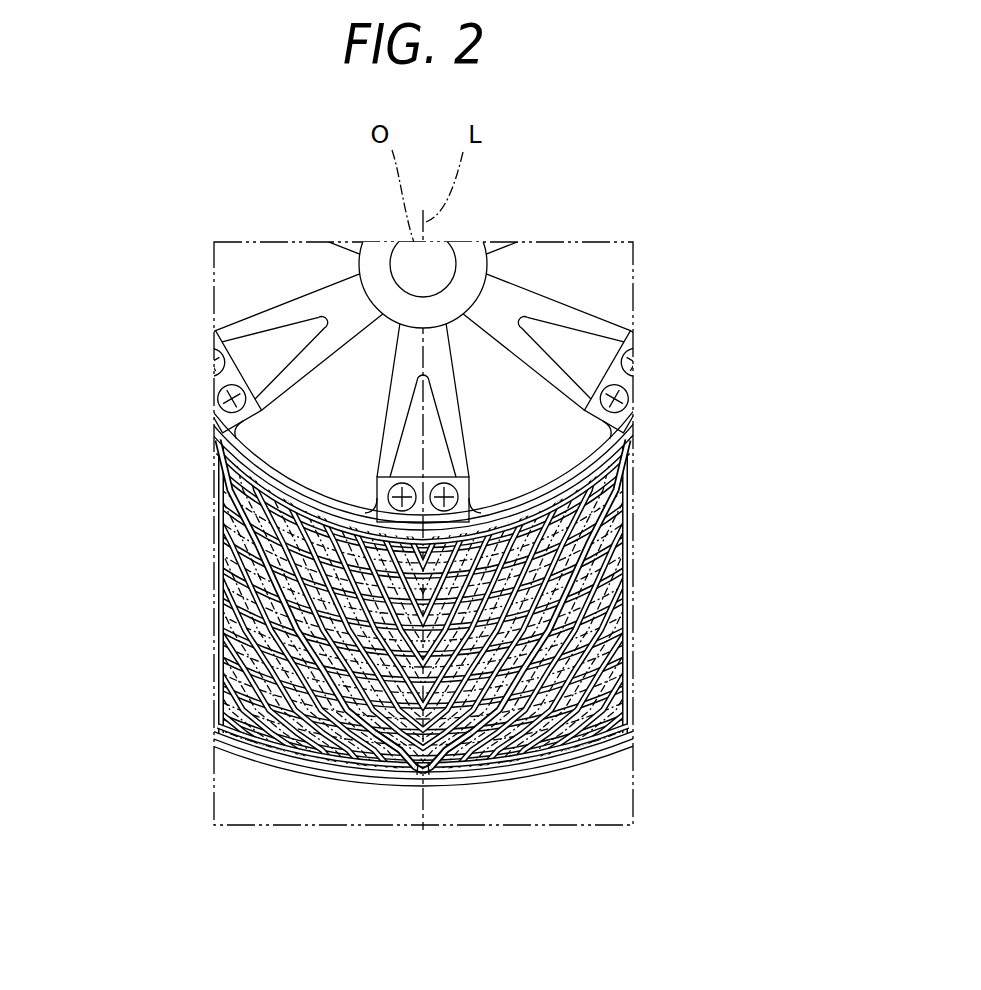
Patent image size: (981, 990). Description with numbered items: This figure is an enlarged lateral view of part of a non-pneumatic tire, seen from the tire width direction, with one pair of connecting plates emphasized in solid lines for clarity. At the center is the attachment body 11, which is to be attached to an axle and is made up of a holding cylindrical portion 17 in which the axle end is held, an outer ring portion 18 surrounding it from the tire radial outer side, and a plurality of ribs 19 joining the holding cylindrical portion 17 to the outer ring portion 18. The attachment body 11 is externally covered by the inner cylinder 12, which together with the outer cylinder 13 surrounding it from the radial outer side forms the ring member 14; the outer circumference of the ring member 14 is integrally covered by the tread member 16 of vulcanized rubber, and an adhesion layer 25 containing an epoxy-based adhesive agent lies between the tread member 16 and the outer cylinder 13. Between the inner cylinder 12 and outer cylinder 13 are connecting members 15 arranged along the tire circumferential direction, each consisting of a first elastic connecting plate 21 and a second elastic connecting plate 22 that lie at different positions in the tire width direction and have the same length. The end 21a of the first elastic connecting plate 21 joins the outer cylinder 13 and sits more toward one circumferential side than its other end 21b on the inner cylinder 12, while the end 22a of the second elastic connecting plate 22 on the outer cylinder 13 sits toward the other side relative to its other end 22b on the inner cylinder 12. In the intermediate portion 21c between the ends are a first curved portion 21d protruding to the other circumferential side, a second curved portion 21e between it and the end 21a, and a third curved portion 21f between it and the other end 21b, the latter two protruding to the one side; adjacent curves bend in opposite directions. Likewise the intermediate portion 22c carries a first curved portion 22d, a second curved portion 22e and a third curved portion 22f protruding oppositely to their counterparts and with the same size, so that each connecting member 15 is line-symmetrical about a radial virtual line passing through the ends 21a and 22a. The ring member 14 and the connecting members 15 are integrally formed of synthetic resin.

The attachment body 11 is at (642, 164).
The inner cylinder 12 is at (278, 482).
The outer cylinder 13 is at (253, 758).
The ring member 14 is at (594, 759).
The connecting member 15 is at (572, 930).
The tread member 16 is at (577, 772).
The holding cylindrical portion 17 is at (482, 265).
The outer ring portion 18 is at (543, 483).
The rib 19 is at (548, 297).
The first elastic connecting plate 21 is at (343, 715).
The end 21a is at (427, 772).
The other end 21b is at (225, 448).
The intermediate portion 21c is at (303, 686).
The first curved portion 21d is at (317, 648).
The second curved portion 21e is at (393, 757).
The third curved portion 21f is at (222, 555).
The second elastic connecting plate 22 is at (503, 715).
The end 22a is at (410, 772).
The other end 22b is at (621, 448).
The intermediate portion 22c is at (543, 686).
The first curved portion 22d is at (529, 648).
The second curved portion 22e is at (457, 757).
The third curved portion 22f is at (624, 555).
The adhesion layer 25 is at (262, 750).